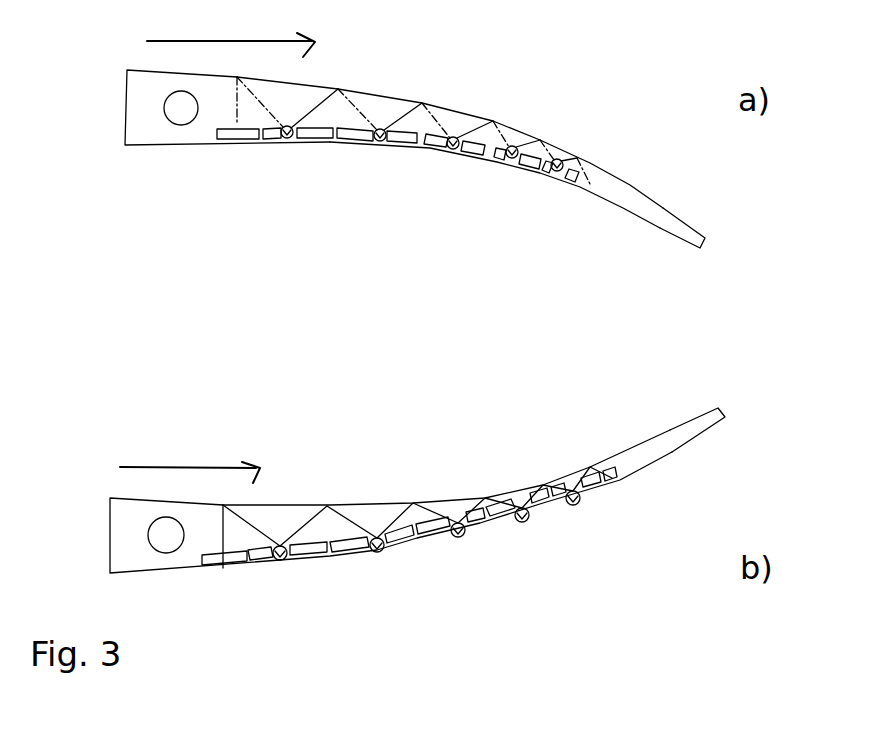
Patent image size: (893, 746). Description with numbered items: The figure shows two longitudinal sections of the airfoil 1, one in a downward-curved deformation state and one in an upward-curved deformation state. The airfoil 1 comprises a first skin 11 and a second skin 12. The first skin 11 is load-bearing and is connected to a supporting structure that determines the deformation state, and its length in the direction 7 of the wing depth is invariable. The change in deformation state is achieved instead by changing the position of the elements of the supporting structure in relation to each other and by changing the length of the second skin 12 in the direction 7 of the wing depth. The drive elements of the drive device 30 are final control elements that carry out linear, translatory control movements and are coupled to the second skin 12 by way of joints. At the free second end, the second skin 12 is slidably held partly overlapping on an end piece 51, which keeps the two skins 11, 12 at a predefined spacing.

The airfoil 1 is at (167, 208).
The direction of the wing depth 7 is at (217, 241).
The first skin 11 is at (460, 112).
The second skin 12 is at (428, 150).
The drive device 30 is at (327, 137).
The end piece 51 is at (663, 213).